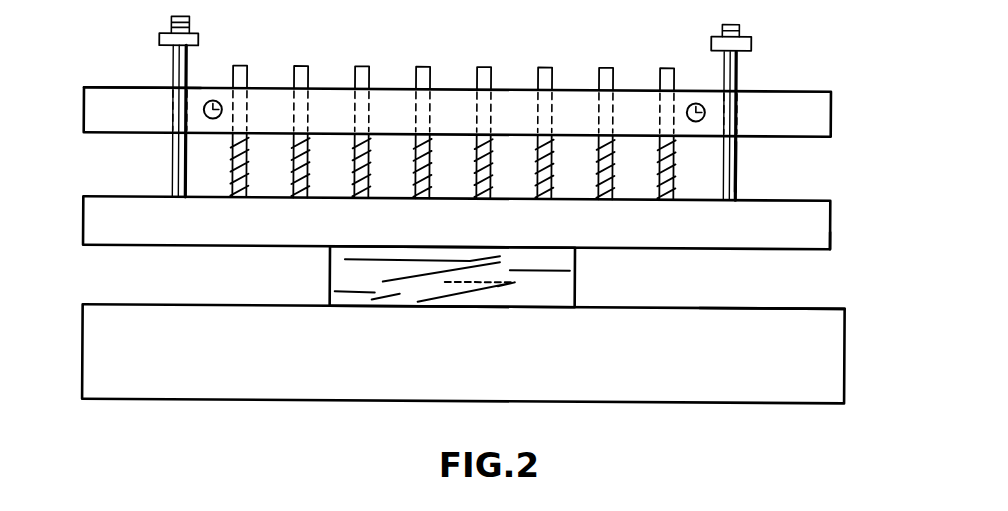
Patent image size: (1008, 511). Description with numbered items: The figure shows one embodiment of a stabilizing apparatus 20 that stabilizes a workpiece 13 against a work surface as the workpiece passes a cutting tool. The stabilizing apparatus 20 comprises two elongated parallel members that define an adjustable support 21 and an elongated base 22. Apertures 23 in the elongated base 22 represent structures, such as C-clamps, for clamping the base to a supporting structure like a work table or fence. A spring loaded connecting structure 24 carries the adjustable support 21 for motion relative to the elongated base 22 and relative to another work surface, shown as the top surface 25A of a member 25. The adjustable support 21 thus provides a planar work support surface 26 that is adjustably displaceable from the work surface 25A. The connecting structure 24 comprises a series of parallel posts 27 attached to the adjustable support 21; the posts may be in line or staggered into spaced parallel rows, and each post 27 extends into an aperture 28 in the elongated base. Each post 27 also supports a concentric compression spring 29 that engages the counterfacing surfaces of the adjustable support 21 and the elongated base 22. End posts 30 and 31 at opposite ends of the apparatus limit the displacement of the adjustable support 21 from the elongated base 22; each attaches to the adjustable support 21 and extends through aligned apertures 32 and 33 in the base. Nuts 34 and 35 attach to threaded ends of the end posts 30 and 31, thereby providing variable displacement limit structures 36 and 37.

The workpiece 13 is at (330, 283).
The stabilizing apparatus 20 is at (97, 84).
The adjustable support 21 is at (84, 207).
The elongated base 22 is at (92, 104).
The apertures 23 is at (212, 102).
The spring loaded connecting structure 24 is at (758, 161).
The member 25 is at (272, 400).
The top surface 25A is at (830, 308).
The planar work support surface 26 is at (830, 247).
The parallel posts 27 is at (246, 160).
The aperture 28 is at (312, 88).
The concentric compression spring 29 is at (232, 156).
The end post 30 is at (172, 160).
The end post 31 is at (737, 192).
The aperture 32 is at (170, 115).
The aperture 33 is at (736, 114).
The nut 34 is at (197, 43).
The nut 35 is at (750, 45).
The variable displacement limit structure 36 is at (150, 61).
The variable displacement limit structure 37 is at (755, 62).